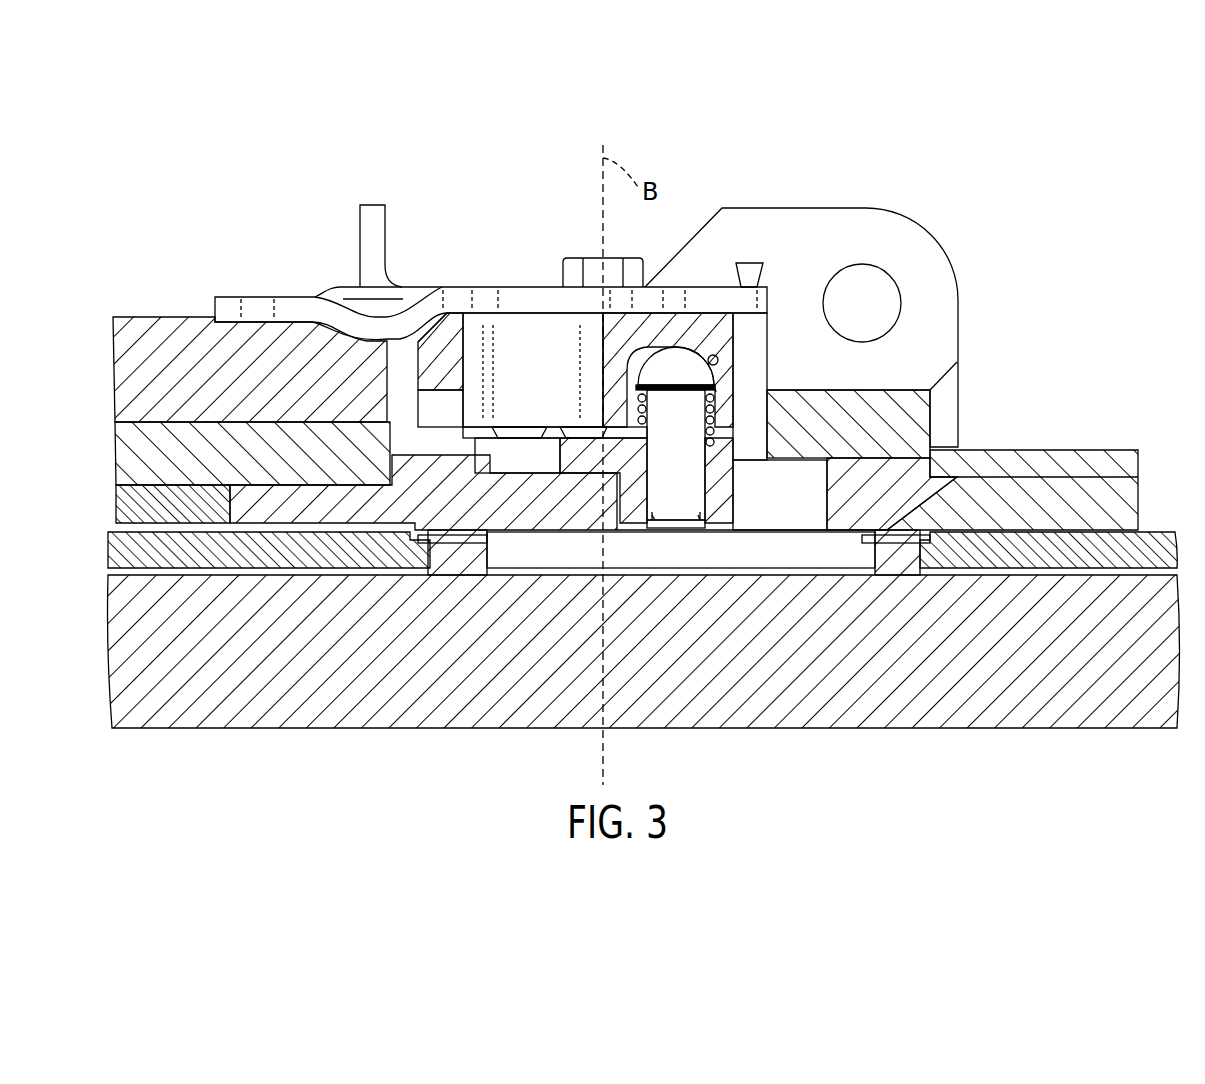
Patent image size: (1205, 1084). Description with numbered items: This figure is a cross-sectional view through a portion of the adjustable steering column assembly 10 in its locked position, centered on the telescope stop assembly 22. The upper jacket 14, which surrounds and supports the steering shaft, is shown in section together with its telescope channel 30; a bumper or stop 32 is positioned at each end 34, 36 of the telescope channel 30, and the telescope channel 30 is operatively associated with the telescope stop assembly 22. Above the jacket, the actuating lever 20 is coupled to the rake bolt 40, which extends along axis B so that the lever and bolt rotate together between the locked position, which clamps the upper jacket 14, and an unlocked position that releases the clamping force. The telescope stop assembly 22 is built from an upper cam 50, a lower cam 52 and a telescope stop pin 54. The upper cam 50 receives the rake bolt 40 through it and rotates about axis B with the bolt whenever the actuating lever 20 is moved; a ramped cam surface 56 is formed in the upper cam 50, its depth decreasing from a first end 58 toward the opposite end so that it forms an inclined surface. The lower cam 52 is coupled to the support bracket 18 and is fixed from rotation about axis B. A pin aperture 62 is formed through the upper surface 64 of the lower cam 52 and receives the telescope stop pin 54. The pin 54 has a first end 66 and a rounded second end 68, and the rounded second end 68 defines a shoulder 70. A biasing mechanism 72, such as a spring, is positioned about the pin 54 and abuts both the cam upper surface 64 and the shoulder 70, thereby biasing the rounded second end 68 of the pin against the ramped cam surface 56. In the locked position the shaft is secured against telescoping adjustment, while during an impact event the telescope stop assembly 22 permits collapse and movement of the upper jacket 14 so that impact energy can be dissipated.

The adjustable steering column assembly 10 is at (812, 110).
The upper jacket 14 is at (985, 718).
The support bracket 18 is at (915, 225).
The actuating lever 20 is at (480, 285).
The telescope stop assembly 22 is at (458, 420).
The telescope channel 30 is at (762, 570).
The bumper or stop 32 is at (442, 570).
The end of telescope channel 34 is at (489, 580).
The end of telescope channel 36 is at (862, 588).
The rake bolt 40 is at (600, 265).
The upper cam 50 is at (550, 345).
The lower cam 52 is at (595, 462).
The telescope stop pin 54 is at (689, 456).
The ramped cam surface 56 is at (718, 352).
The first end of cam surface 58 is at (664, 342).
The pin aperture 62 is at (696, 510).
The upper surface 64 is at (720, 437).
The first end of pin 66 is at (660, 508).
The rounded second end 68 is at (712, 360).
The shoulder 70 is at (715, 388).
The biasing mechanism 72 is at (715, 420).